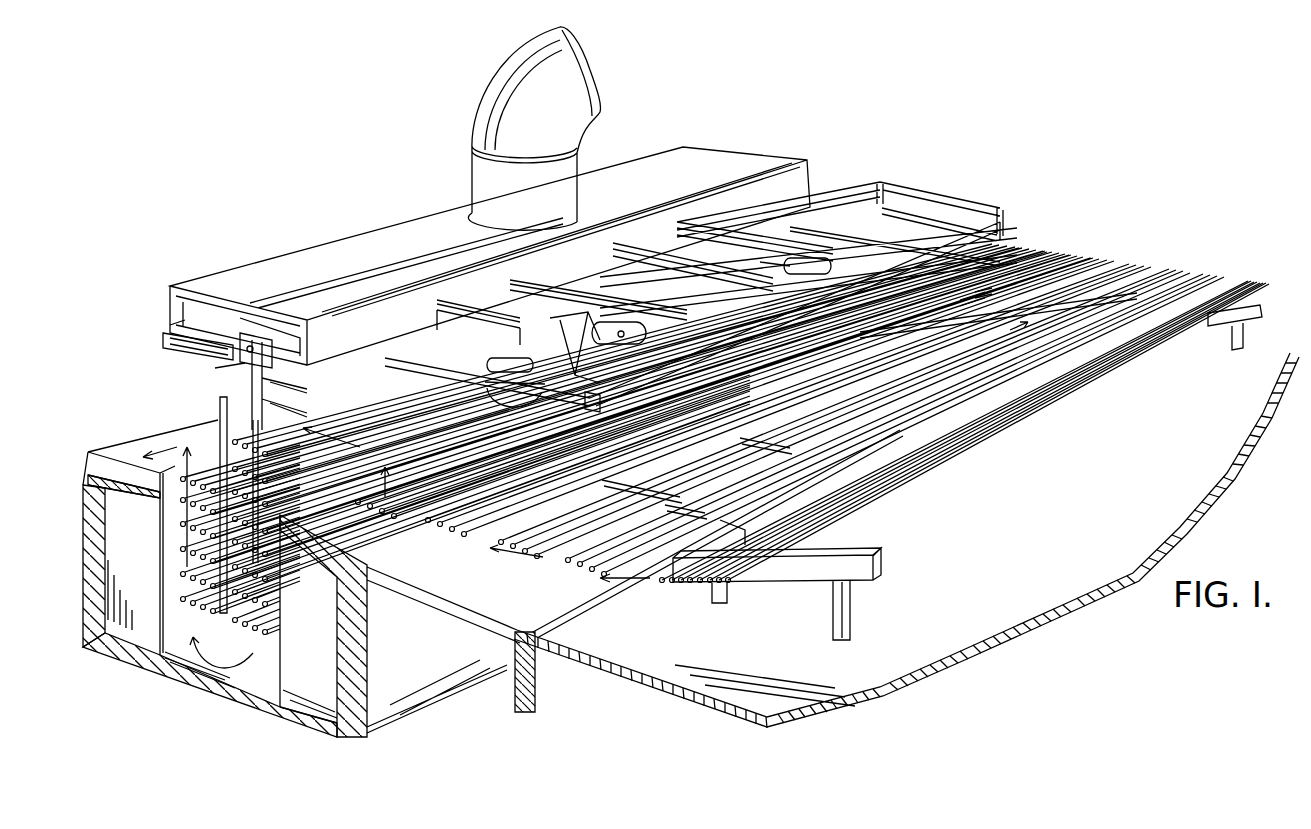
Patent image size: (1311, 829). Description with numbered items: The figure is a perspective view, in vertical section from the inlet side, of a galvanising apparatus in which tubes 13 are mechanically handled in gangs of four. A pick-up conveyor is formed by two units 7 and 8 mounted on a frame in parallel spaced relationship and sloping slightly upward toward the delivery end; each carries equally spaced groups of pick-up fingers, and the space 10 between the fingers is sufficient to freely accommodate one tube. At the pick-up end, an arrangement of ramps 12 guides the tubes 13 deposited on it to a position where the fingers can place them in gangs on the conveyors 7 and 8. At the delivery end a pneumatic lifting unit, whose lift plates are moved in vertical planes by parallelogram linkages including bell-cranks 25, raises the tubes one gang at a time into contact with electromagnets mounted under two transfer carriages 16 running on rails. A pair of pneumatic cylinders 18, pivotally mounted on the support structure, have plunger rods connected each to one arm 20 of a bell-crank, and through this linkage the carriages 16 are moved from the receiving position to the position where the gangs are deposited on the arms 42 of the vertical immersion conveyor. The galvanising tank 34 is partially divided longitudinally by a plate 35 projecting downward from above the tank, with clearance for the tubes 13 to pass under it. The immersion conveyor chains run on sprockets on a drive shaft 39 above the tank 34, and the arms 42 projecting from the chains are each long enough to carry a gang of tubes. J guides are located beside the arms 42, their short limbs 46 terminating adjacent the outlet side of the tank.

The pick-up conveyor unit 7 is at (868, 437).
The pick-up conveyor unit 8 is at (695, 493).
The space between pick-up fingers 10 is at (565, 556).
The ramps 12 is at (872, 576).
The tubes 13 is at (310, 498).
The transfer carriages 16 is at (701, 297).
The pneumatic cylinders 18 is at (818, 262).
The bell-crank arm 20 is at (586, 314).
The bell-cranks 25 is at (970, 300).
The galvanising tank 34 is at (290, 626).
The plate 35 is at (371, 381).
The drive shaft 39 is at (217, 372).
The arms 42 is at (222, 372).
The short limbs of the J guides 46 is at (172, 560).